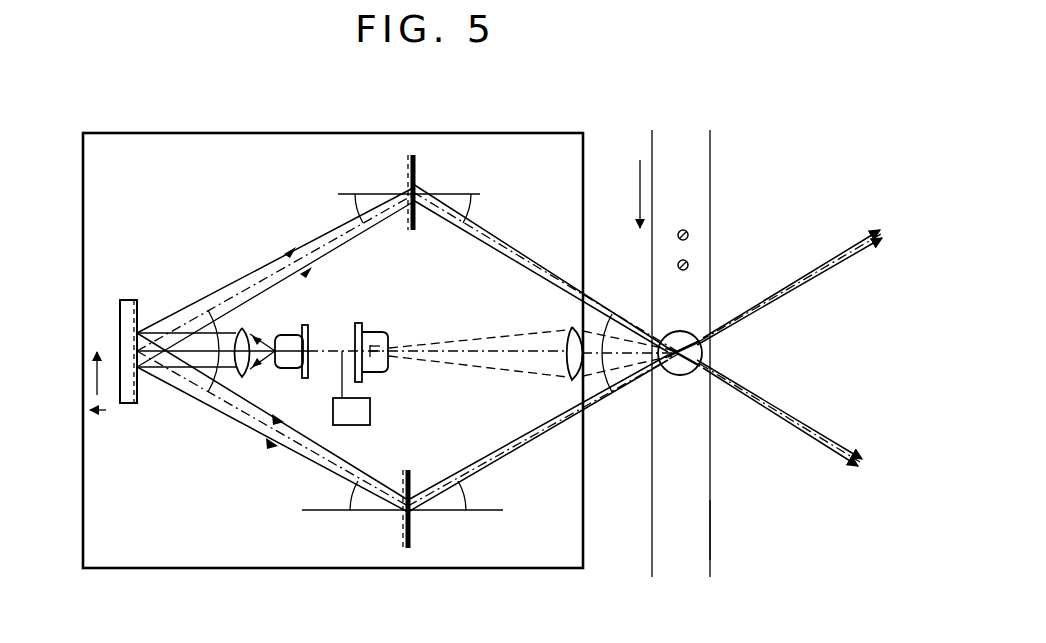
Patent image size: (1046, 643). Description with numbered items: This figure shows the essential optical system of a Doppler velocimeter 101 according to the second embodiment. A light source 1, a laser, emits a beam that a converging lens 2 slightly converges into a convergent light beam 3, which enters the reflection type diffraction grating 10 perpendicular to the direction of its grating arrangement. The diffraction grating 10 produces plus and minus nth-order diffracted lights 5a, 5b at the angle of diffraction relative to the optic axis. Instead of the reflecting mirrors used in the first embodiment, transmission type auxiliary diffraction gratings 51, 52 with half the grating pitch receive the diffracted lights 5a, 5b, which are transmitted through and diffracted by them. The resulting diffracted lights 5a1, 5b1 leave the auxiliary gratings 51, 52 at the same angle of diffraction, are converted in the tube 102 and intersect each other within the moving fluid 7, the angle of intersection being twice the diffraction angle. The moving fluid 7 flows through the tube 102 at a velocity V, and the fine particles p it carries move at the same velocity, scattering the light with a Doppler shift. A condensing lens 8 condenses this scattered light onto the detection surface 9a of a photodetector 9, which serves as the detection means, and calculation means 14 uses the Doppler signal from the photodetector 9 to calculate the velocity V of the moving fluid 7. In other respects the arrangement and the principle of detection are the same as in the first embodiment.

The Doppler velocimeter 101 is at (116, 133).
The diffraction grating 10 is at (128, 326).
The light source 1 is at (303, 328).
The converging lens 2 is at (252, 330).
The convergent light beam 3 is at (240, 333).
The diffracted light 5a is at (163, 385).
The diffracted light 5b is at (180, 313).
The diffracted light 5a1 is at (505, 457).
The diffracted light 5b1 is at (515, 248).
The auxiliary diffraction grating 51 is at (414, 525).
The auxiliary diffraction grating 52 is at (418, 196).
The moving fluid 7 is at (700, 208).
The condensing lens 8 is at (570, 334).
The photodetector 9 is at (378, 331).
The detection surface 9a is at (392, 372).
The calculation means 14 is at (370, 418).
The tube 102 is at (703, 520).
The fine particles p is at (690, 234).
The velocity V is at (634, 178).